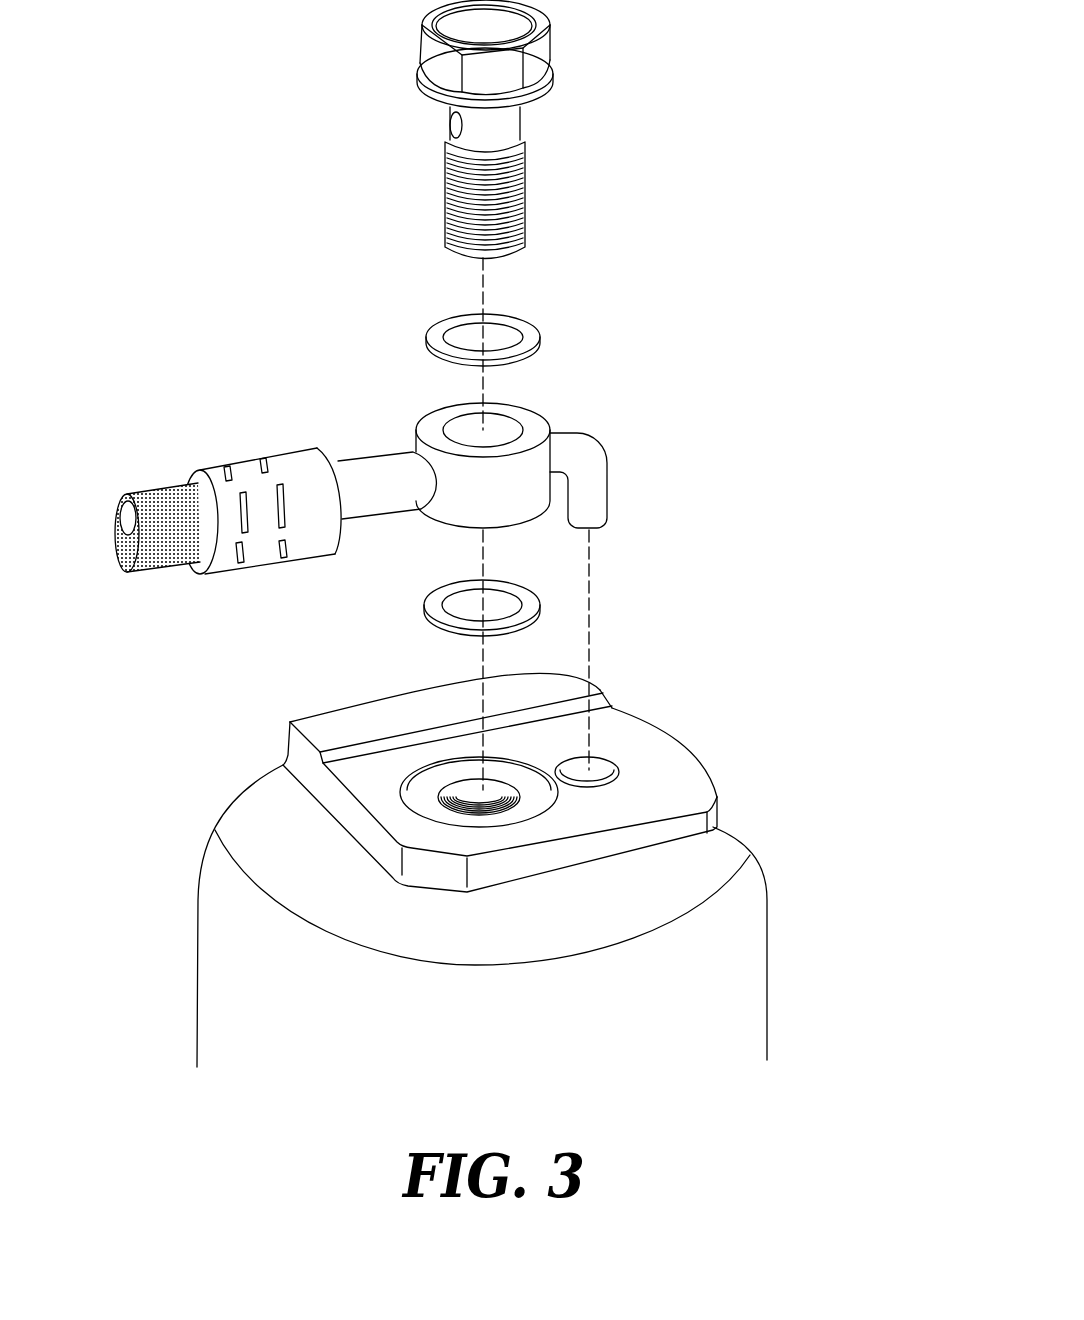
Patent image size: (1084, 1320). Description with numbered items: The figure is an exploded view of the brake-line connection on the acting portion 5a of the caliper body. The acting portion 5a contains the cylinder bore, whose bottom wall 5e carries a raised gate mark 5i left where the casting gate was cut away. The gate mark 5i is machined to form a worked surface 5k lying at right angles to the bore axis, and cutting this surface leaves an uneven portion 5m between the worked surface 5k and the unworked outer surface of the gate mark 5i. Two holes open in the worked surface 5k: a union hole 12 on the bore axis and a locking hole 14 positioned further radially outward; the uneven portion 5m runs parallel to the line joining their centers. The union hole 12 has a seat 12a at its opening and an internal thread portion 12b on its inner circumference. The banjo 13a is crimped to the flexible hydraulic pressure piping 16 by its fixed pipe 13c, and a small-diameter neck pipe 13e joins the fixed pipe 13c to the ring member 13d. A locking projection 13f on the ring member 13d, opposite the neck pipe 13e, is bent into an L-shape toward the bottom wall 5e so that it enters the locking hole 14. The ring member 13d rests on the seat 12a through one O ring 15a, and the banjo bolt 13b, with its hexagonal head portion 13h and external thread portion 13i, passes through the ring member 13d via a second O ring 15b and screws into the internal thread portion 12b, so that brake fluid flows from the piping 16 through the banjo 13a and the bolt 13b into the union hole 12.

The banjo bolt 13b is at (529, 129).
The hexagonal head portion 13h is at (540, 47).
The external thread portion 13i is at (527, 205).
The O ring 15b is at (536, 340).
The banjo 13a is at (511, 467).
The ring member 13d is at (518, 512).
The neck pipe 13e is at (380, 505).
The locking projection 13f is at (604, 497).
The fixed pipe 13c is at (278, 460).
The hydraulic pressure piping 16 is at (173, 560).
The O ring 15a is at (430, 608).
The acting portion 5a is at (527, 854).
The bottom wall 5e is at (482, 954).
The gate mark 5i is at (357, 703).
The uneven portion 5m is at (612, 702).
The worked surface 5k is at (690, 754).
The union hole 12 is at (520, 761).
The seat 12a is at (546, 795).
The internal thread portion 12b is at (508, 788).
The locking hole 14 is at (600, 777).